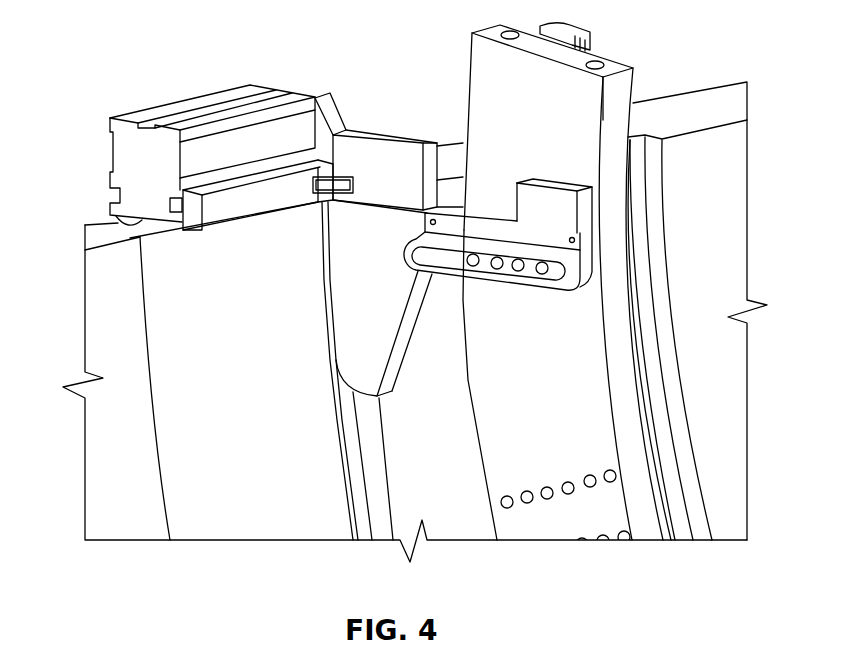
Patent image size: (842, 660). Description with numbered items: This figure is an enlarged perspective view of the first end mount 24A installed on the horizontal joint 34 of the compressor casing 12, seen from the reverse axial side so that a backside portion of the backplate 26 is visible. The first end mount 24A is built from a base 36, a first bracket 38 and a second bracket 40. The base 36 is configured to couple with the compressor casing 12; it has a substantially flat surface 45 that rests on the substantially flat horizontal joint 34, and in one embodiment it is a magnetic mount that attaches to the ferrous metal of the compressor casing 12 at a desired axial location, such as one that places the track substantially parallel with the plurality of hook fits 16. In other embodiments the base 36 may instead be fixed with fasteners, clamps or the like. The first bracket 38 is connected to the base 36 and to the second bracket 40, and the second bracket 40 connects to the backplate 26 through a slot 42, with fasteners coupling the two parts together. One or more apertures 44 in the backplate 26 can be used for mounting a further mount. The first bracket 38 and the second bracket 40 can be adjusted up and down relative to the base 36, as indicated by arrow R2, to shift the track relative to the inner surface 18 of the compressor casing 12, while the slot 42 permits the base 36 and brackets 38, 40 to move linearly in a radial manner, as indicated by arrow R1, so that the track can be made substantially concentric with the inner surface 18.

The compressor casing 12 is at (145, 390).
The hook fits 16 is at (372, 457).
The inner surface 18 is at (262, 404).
The first end mount 24A is at (370, 42).
The backplate 26 is at (493, 107).
The horizontal joint 34 is at (720, 107).
The base 36 is at (126, 162).
The first bracket 38 is at (352, 157).
The second bracket 40 is at (353, 322).
The slot 42 is at (470, 257).
The apertures 44 is at (610, 471).
The substantially flat surface 45 is at (122, 216).
The arrow R1 is at (393, 252).
The arrow R2 is at (297, 77).